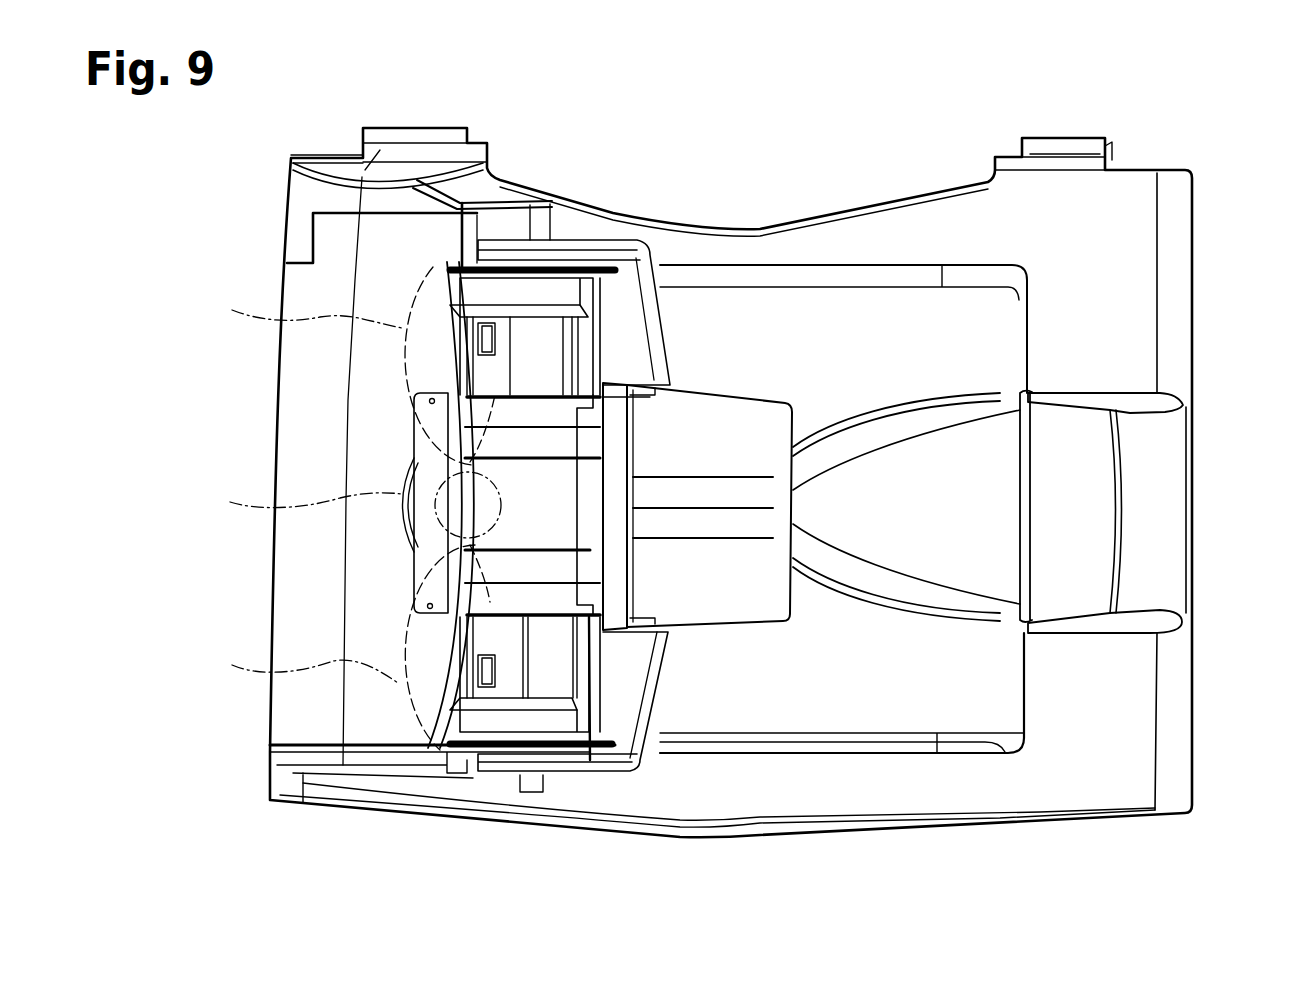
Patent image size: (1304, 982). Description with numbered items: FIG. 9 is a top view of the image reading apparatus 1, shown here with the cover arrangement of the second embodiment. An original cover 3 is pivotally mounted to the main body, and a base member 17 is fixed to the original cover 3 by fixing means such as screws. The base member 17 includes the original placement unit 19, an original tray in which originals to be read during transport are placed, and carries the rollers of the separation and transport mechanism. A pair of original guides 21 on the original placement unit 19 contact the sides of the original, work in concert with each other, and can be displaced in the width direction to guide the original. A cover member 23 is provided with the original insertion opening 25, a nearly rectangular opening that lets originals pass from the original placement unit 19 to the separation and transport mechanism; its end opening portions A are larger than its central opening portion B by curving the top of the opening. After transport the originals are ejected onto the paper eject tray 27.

The electric blower 1 is at (1146, 160).
The original cover 3 is at (1130, 310).
The base member 17 is at (315, 156).
The original placement unit 19 is at (577, 567).
The original guides 21 is at (580, 255).
The cover member 23 is at (397, 238).
The original insertion opening 25 is at (458, 710).
The paper eject tray 27 is at (915, 695).